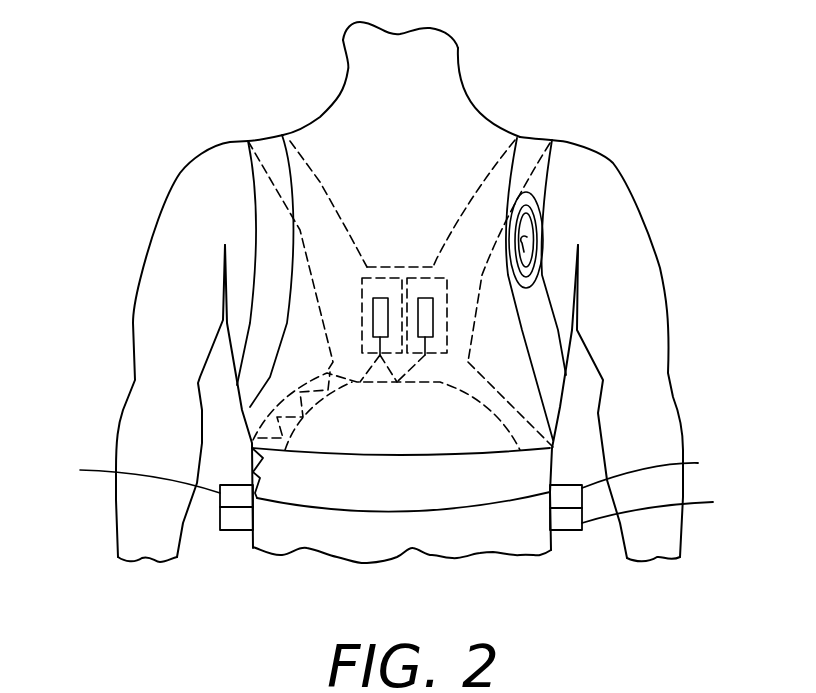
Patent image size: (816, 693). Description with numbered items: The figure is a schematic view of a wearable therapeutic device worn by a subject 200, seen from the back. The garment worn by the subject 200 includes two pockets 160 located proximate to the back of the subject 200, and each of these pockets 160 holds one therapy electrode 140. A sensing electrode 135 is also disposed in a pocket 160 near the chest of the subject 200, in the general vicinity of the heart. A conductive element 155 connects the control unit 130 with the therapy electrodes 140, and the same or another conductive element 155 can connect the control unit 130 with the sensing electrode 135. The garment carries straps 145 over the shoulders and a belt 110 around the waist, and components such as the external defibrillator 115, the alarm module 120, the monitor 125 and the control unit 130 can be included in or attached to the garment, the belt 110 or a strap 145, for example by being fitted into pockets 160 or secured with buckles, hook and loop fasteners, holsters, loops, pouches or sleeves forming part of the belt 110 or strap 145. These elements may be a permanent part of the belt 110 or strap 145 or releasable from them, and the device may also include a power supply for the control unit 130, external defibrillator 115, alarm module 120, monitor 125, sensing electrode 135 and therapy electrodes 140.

The subject 200 is at (458, 67).
The strap 145 is at (530, 137).
The pocket 160 is at (507, 205).
The therapy electrode 140 is at (373, 325).
The sensing electrode 135 is at (523, 243).
The conductive element 155 is at (312, 381).
The alarm module 120 is at (500, 480).
The external defibrillator 115 is at (653, 507).
The monitor 125 is at (220, 525).
The control unit 130 is at (126, 474).
The belt 110 is at (397, 512).